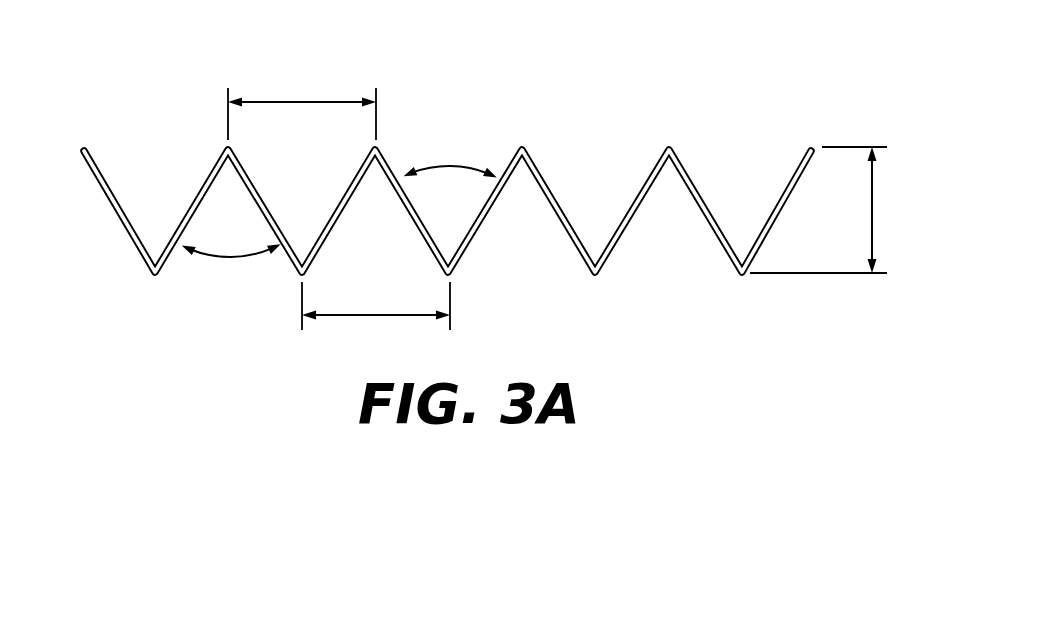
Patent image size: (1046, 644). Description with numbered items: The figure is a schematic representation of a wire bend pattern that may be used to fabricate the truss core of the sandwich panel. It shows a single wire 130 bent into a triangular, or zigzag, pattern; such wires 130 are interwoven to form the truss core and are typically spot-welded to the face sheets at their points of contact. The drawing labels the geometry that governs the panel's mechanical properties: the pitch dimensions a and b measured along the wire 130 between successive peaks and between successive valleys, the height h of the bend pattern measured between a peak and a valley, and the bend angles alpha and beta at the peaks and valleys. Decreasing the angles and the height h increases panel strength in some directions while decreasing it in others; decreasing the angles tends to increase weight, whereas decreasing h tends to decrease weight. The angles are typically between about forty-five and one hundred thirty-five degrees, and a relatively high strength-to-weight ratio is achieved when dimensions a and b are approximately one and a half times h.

The wire 130 is at (717, 66).
The dimension a is at (376, 314).
The dimension b is at (302, 103).
The height h is at (822, 210).